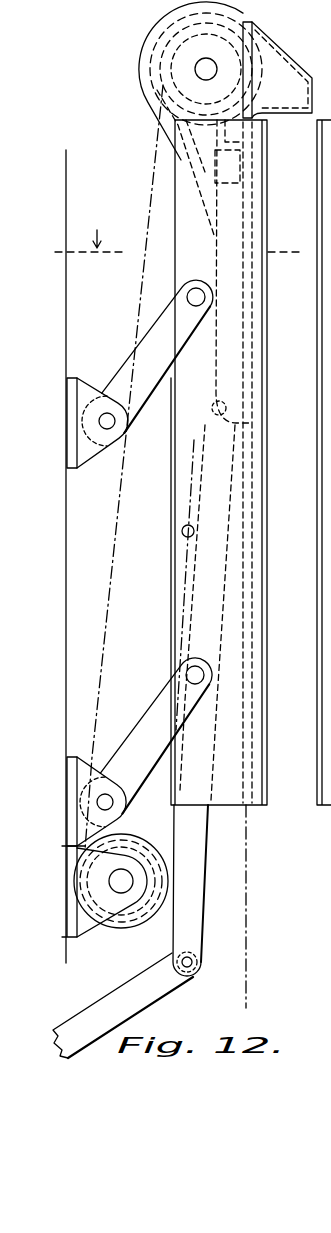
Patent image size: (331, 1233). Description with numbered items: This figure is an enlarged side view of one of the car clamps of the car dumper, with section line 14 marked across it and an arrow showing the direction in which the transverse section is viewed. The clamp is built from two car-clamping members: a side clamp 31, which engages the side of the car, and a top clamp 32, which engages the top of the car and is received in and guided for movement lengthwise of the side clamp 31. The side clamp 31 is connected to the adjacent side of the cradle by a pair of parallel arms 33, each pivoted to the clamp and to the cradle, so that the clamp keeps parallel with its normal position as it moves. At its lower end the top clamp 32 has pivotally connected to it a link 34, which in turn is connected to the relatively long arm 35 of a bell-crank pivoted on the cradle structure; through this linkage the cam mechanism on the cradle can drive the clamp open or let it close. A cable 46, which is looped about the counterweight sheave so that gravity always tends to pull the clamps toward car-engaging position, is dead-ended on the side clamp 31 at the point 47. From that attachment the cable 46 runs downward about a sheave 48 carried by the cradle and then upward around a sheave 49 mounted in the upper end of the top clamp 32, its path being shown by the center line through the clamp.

The section line 14 is at (173, 241).
The side clamp 31 is at (266, 442).
The top clamp 32 is at (275, 46).
The parallel arms 33 is at (136, 349).
The link 34 is at (200, 896).
The long arm of bell-crank 35 is at (163, 993).
The cable 46 is at (176, 648).
The cable dead-end 47 is at (183, 534).
The sheave 48 is at (134, 928).
The sheave 49 is at (141, 96).